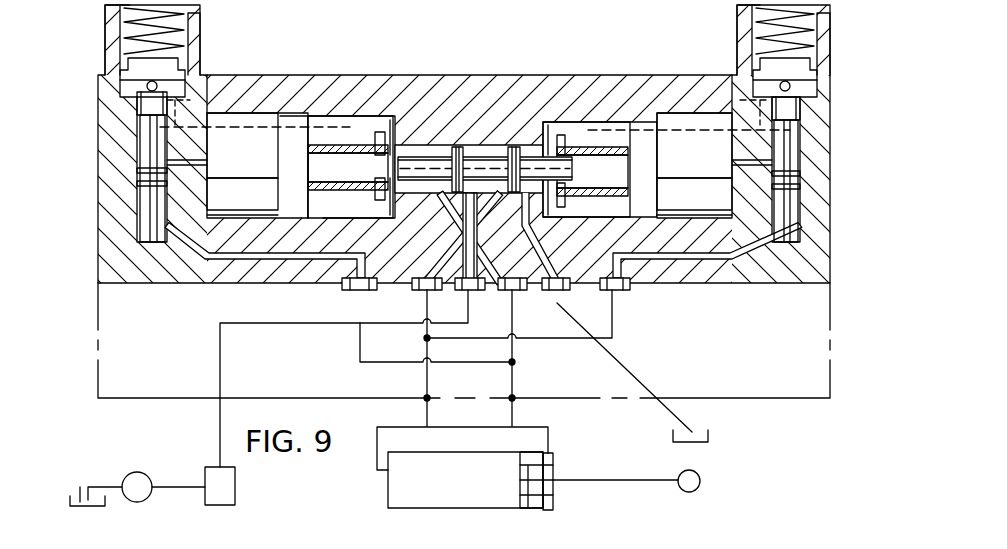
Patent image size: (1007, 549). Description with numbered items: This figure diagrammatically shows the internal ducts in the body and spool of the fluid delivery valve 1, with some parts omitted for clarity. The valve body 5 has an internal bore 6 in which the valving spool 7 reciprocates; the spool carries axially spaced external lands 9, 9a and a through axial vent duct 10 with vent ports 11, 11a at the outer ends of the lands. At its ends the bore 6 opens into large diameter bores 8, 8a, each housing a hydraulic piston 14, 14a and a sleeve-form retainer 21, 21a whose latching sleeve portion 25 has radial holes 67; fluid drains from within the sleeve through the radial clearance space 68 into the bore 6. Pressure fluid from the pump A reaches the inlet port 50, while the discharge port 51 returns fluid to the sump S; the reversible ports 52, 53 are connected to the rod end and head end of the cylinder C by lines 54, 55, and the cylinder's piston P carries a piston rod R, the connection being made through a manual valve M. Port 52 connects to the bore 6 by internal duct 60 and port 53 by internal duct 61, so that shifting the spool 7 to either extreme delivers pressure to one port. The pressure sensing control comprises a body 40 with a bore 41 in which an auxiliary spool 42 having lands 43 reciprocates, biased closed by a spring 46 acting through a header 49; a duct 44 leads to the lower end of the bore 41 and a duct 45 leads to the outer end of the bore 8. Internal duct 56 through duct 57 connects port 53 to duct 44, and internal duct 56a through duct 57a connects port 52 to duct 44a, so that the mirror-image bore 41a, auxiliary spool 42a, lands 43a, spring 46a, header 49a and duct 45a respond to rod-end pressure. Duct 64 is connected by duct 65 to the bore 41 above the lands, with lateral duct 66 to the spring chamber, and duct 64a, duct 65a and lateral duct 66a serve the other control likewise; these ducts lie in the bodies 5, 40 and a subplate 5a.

The body 40 is at (98, 265).
The through axial vent duct 10 is at (418, 238).
The internal duct 61 is at (445, 255).
The internal duct 60 is at (518, 252).
The duct 57a is at (332, 288).
The latching sleeve portion 25 is at (685, 255).
The internal duct 57 is at (628, 291).
The duct 44a is at (166, 285).
The duct 44 is at (762, 285).
The spring 46a is at (104, 36).
The header 49a is at (130, 77).
The auxiliary valve spool 42a is at (150, 142).
The lands 43a is at (140, 184).
The bore 41a is at (150, 226).
The spring 46 is at (832, 36).
The header 49 is at (800, 84).
The auxiliary valve spool 42 is at (790, 140).
The lands 43 is at (800, 186).
The bore 41 is at (790, 222).
The duct 65a is at (215, 160).
The duct 45a is at (213, 192).
The duct 65 is at (712, 155).
The duct 45 is at (725, 190).
The large diameter bore 8a is at (326, 218).
The retainer 21a is at (358, 158).
The radial clearance space 68 is at (315, 186).
The large diameter bore 8 is at (580, 225).
The retainer 21 is at (582, 167).
The internal bore 6 is at (498, 150).
The external land 9a is at (456, 146).
The external land 9 is at (494, 150).
The body 5 is at (462, 145).
The valving spool 7 is at (476, 147).
The fluid delivery valve 1 is at (474, 103).
The vent port 11a is at (405, 105).
The vent port 11 is at (549, 125).
The radial holes 67 is at (380, 130).
The lateral duct 66a is at (213, 110).
The hydraulic piston 14a is at (232, 145).
The duct 64a is at (312, 113).
The duct 64 is at (624, 113).
The hydraulic piston 14 is at (690, 150).
The lateral duct 66 is at (712, 113).
The reversible delivery and return port 53 is at (425, 290).
The inlet port 50 is at (496, 290).
The reversible delivery and return port 52 is at (522, 292).
The discharge port 51 is at (574, 290).
The subplate 5a is at (790, 398).
The internal duct 56 is at (424, 337).
The internal duct 56a is at (398, 362).
The line 54 is at (552, 440).
The line 55 is at (377, 456).
The cylinder C is at (397, 497).
The piston P is at (535, 510).
The piston rod R is at (602, 481).
The pump A is at (137, 472).
The manual valve M is at (214, 470).
The sump S is at (78, 497).